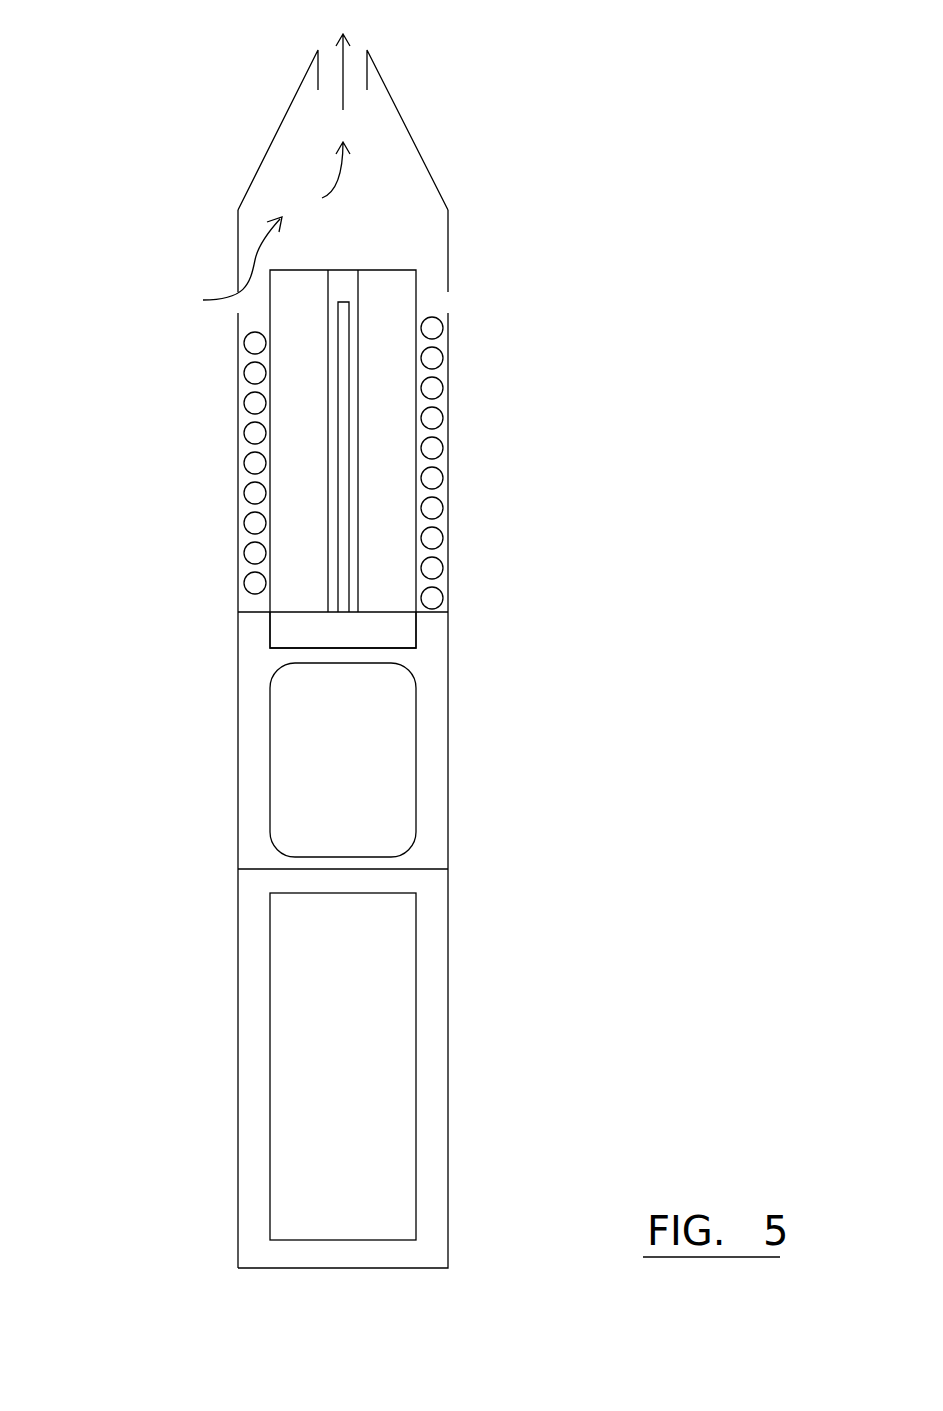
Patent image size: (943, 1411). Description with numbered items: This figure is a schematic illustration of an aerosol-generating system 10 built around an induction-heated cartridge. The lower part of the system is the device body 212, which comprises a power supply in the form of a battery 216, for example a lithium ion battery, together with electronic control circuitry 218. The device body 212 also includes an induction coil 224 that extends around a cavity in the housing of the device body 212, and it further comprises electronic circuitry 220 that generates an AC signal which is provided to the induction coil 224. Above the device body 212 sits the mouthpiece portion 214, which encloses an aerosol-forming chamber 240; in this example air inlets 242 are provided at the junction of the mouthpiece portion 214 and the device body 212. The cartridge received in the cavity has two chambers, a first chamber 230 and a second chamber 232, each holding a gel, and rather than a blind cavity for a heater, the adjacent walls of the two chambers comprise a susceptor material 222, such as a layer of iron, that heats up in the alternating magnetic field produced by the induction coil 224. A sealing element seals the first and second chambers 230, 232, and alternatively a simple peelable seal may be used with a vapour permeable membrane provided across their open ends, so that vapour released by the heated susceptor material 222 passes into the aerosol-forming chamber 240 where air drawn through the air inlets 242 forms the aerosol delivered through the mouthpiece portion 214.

The aerosol generating device 10 is at (228, 836).
The device body 212 is at (450, 548).
The mouthpiece portion 214 is at (250, 182).
The battery 216 is at (418, 1065).
The electronic control circuitry 218 is at (270, 755).
The electronic circuitry 220 is at (418, 630).
The susceptor material 222 is at (348, 450).
The induction coil 224 is at (255, 373).
The first chamber 230 is at (268, 452).
The second chamber 232 is at (390, 398).
The aerosol-forming chamber 240 is at (312, 140).
The air inlets 242 is at (452, 302).